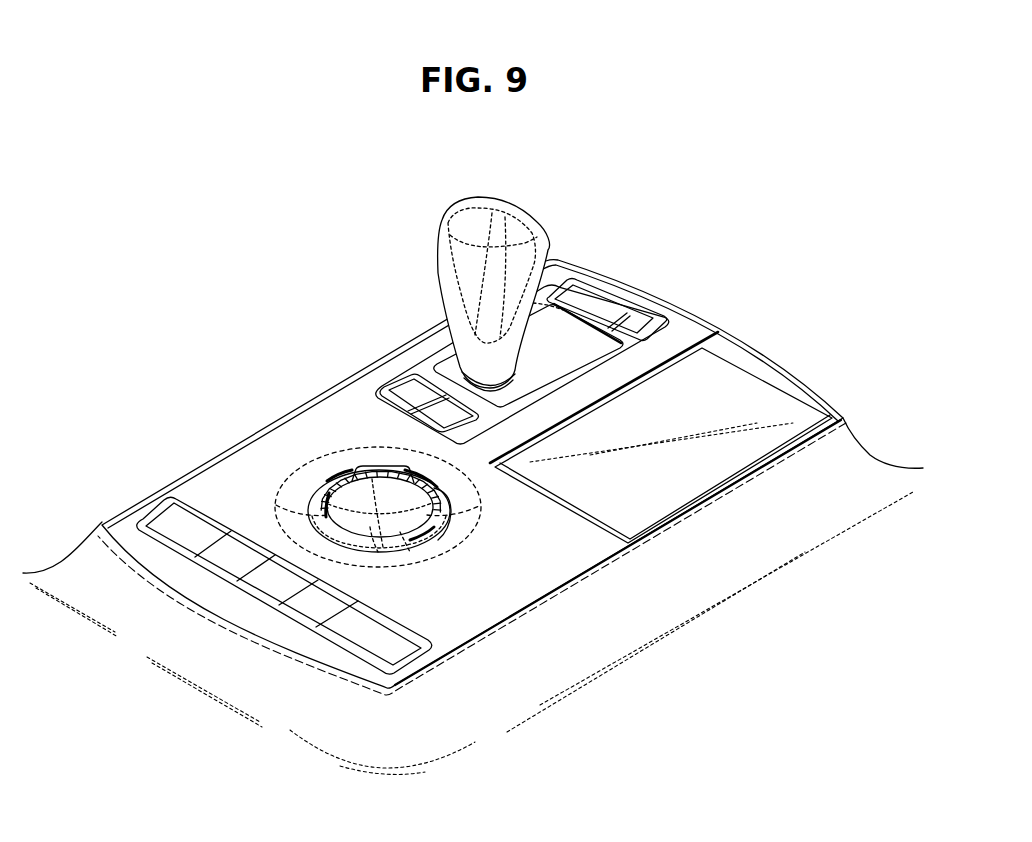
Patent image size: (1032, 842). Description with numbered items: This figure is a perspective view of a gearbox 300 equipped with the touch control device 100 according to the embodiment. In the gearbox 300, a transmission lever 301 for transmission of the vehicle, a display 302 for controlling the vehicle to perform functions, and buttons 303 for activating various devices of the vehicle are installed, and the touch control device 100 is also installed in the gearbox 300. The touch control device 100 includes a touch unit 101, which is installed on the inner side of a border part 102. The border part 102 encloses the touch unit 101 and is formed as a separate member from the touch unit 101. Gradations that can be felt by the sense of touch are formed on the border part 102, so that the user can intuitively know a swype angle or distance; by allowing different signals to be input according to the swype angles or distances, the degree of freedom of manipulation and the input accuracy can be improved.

The touch control device 100 is at (328, 436).
The touch unit 101 is at (367, 528).
The border part 102 is at (400, 545).
The gearbox 300 is at (750, 324).
The transmission lever 301 is at (502, 204).
The display 302 is at (783, 405).
The buttons 303 is at (160, 518).